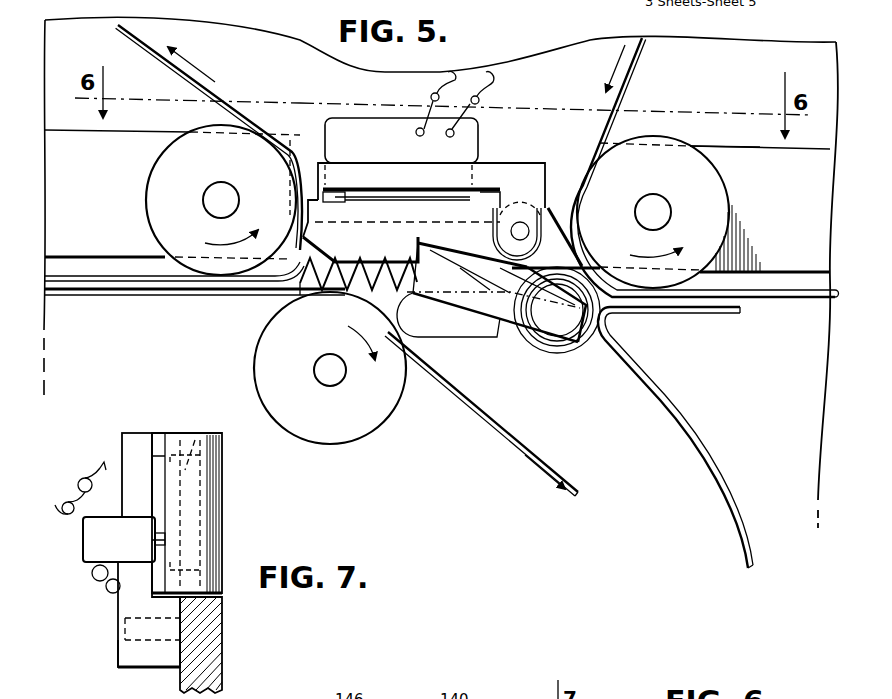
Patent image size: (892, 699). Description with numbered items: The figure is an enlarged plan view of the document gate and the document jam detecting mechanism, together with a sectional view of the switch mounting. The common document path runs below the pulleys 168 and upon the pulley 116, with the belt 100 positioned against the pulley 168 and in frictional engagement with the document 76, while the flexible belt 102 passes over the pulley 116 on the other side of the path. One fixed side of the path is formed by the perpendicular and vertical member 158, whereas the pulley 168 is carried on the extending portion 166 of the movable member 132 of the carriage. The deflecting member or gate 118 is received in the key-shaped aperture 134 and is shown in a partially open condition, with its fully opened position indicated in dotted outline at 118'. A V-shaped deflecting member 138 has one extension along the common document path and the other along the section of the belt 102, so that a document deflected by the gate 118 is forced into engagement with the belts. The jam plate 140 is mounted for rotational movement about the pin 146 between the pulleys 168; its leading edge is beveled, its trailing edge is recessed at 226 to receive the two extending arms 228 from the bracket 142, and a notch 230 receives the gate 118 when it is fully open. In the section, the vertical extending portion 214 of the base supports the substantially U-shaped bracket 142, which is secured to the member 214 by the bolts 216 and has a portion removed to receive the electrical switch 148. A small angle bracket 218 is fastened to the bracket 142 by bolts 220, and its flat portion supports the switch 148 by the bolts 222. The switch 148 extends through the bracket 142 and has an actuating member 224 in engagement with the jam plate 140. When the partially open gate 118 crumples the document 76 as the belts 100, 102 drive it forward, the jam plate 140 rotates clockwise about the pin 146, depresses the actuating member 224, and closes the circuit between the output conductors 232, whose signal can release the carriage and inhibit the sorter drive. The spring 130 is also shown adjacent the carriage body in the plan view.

In FIG. 5, the document 76 is at (332, 300).
In FIG. 5, the belt 100 is at (186, 78).
In FIG. 5, the belt 102 is at (480, 408).
In FIG. 5, the pulley 116 is at (350, 432).
In FIG. 5, the deflecting member or gate 118 is at (496, 308).
In FIG. 5, the gate in fully opened position 118' is at (448, 315).
In FIG. 5, the spring 130 is at (300, 262).
In FIG. 5, the base or movable member of the carriage 132 is at (254, 74).
In FIG. 5, the key-shaped aperture 134 is at (563, 362).
In FIG. 5, the V-shaped deflecting member 138 is at (715, 478).
In FIG. 5, the jam plate 140 is at (430, 212).
In FIG. 7, the jam plate 140 is at (215, 488).
In FIG. 5, the bracket 142 is at (492, 166).
In FIG. 7, the bracket 142 is at (130, 452).
In FIG. 5, the pin 146 is at (546, 236).
In FIG. 7, the pin 146 is at (195, 516).
In FIG. 5, the electrical switch 148 is at (374, 130).
In FIG. 7, the electrical switch 148 is at (85, 541).
In FIG. 5, the perpendicular and vertical member 158 is at (98, 300).
In FIG. 5, the extending portion 166 is at (740, 154).
In FIG. 5, the pulley 168 is at (160, 190).
In FIG. 5, the vertical extending portion 214 is at (340, 200).
In FIG. 7, the vertical extending portion 214 is at (212, 667).
In FIG. 7, the bolts 216 is at (115, 645).
In FIG. 7, the angle bracket 218 is at (92, 572).
In FIG. 7, the bolts 220 is at (125, 630).
In FIG. 7, the bolts 222 is at (108, 592).
In FIG. 5, the actuating member 224 is at (378, 200).
In FIG. 7, the actuating member 224 is at (155, 538).
In FIG. 5, the recess 226 is at (492, 220).
In FIG. 7, the recess 226 is at (197, 440).
In FIG. 5, the extending arms 228 is at (540, 196).
In FIG. 7, the extending arms 228 is at (158, 438).
In FIG. 5, the notch 230 is at (417, 248).
In FIG. 5, the output conductors 232 is at (455, 95).
In FIG. 7, the output conductors 232 is at (98, 468).